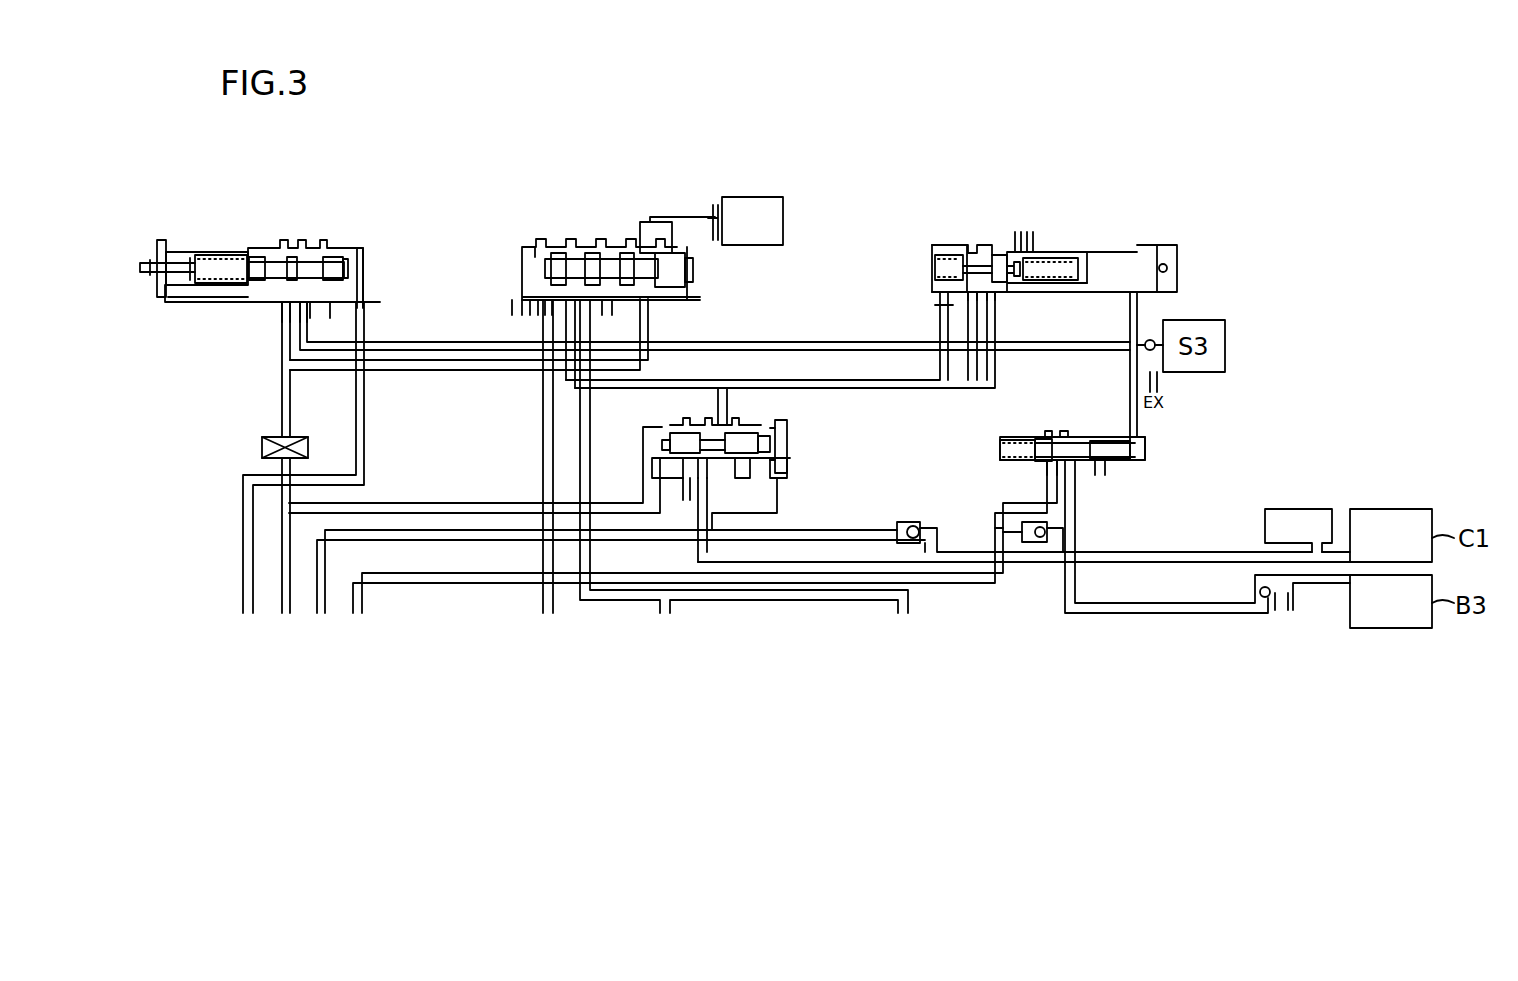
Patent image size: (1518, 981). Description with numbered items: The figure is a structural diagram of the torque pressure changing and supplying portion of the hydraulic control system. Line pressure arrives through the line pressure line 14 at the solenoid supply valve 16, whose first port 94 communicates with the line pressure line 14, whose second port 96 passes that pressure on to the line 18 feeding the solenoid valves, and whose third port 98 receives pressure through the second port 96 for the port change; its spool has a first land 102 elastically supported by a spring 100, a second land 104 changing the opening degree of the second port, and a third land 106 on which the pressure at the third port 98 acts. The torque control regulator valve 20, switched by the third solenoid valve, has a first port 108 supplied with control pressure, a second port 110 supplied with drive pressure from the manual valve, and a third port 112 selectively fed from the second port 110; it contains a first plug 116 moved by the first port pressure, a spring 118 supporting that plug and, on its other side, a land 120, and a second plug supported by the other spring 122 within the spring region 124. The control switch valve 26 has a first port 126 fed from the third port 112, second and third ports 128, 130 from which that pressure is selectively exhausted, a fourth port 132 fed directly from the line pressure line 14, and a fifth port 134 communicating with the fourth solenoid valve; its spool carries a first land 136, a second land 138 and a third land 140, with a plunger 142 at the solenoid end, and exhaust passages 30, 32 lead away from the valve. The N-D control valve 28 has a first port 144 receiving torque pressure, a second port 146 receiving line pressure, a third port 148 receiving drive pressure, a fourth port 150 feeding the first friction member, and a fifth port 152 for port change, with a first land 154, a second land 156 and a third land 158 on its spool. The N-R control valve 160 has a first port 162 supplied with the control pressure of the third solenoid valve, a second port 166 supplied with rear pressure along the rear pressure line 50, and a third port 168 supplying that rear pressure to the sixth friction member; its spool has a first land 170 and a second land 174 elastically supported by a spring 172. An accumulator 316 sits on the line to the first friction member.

The line pressure line 14 is at (280, 569).
The solenoid supply valve 16 is at (388, 269).
The line 18 is at (838, 340).
The torque control regulator valve 20 is at (1192, 269).
The control switch valve 26 is at (708, 268).
The N-D control valve 28 is at (794, 447).
The third port 30 is at (542, 428).
The fourth port 32 is at (583, 416).
The rear pressure line 50 is at (963, 585).
The first port 94 is at (283, 287).
The second port 96 is at (300, 292).
The third port 98 is at (357, 285).
The spring 100 is at (235, 252).
The first land 102 is at (262, 257).
The second land 104 is at (292, 257).
The third land 106 is at (333, 257).
The first port 108 is at (1128, 297).
The second port 110 is at (975, 296).
The third port 112 is at (988, 293).
The first plug 116 is at (1068, 254).
The spring 118 is at (1050, 258).
The land 120 is at (995, 262).
The spring 122 is at (933, 280).
The spring 124 is at (937, 256).
The first port 126 is at (548, 293).
The second port 128 is at (535, 292).
The third port 130 is at (565, 292).
The fourth port 132 is at (646, 302).
The fifth port 134 is at (641, 247).
The first land 136 is at (553, 260).
The second land 138 is at (592, 260).
The third land 140 is at (627, 260).
The plunger 142 is at (675, 272).
The first port 144 is at (722, 425).
The second port 146 is at (648, 462).
The third port 148 is at (685, 470).
The fourth port 150 is at (703, 470).
The fifth port 152 is at (778, 468).
The first land 154 is at (680, 433).
The second land 156 is at (740, 433).
The third land 158 is at (770, 435).
The N-R control valve 160 is at (1160, 449).
The first port 162 is at (1135, 440).
The second port 166 is at (1050, 465).
The third port 168 is at (1070, 468).
The first land 170 is at (1100, 440).
The spring 172 is at (1013, 440).
The second land 174 is at (1045, 437).
The accumulator 316 is at (1296, 510).